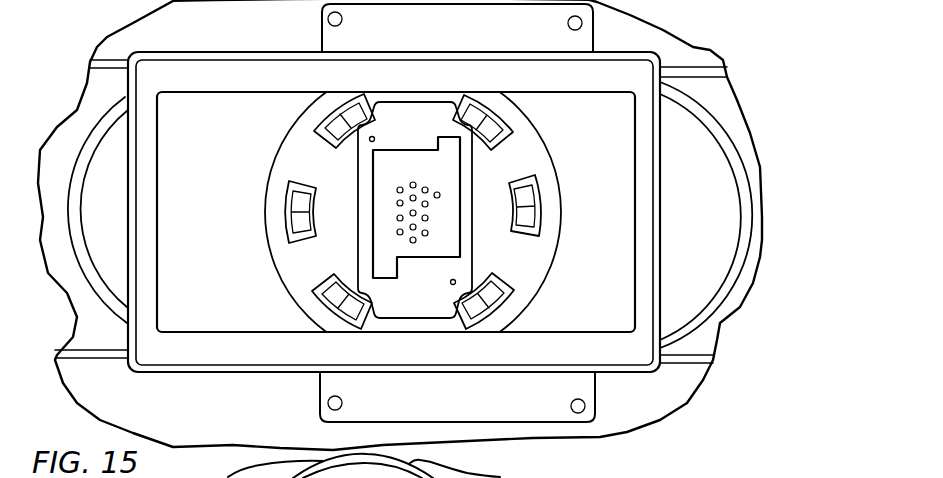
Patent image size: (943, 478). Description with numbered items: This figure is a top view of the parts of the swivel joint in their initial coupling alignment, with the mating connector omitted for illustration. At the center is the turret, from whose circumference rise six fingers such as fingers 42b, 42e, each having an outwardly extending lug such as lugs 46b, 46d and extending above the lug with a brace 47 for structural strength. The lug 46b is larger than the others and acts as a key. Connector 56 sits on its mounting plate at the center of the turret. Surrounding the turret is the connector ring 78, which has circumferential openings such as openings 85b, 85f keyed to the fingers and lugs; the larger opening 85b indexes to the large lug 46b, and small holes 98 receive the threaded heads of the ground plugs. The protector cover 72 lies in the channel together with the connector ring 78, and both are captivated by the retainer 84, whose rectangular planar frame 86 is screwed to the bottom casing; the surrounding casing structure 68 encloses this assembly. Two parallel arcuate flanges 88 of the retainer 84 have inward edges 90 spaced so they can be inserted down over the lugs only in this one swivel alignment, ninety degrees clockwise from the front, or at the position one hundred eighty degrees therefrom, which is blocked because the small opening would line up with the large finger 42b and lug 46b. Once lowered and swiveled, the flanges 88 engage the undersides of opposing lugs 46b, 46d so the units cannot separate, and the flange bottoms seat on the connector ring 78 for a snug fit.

The finger 42b is at (518, 212).
The finger 42e is at (314, 208).
The lug 46b is at (532, 178).
The lug 46d is at (313, 305).
The brace 47 is at (534, 231).
The connector 56 is at (447, 184).
The housing 68 is at (95, 362).
The protector cover 72 is at (723, 173).
The connector ring 78 is at (535, 293).
The retainer 84 is at (630, 48).
The circumferential opening 85b is at (536, 218).
The circumferential opening 85f is at (330, 136).
The frame 86 is at (320, 392).
The flange 88 is at (220, 340).
The inward edge 90 is at (228, 93).
The small hole 98 is at (374, 137).